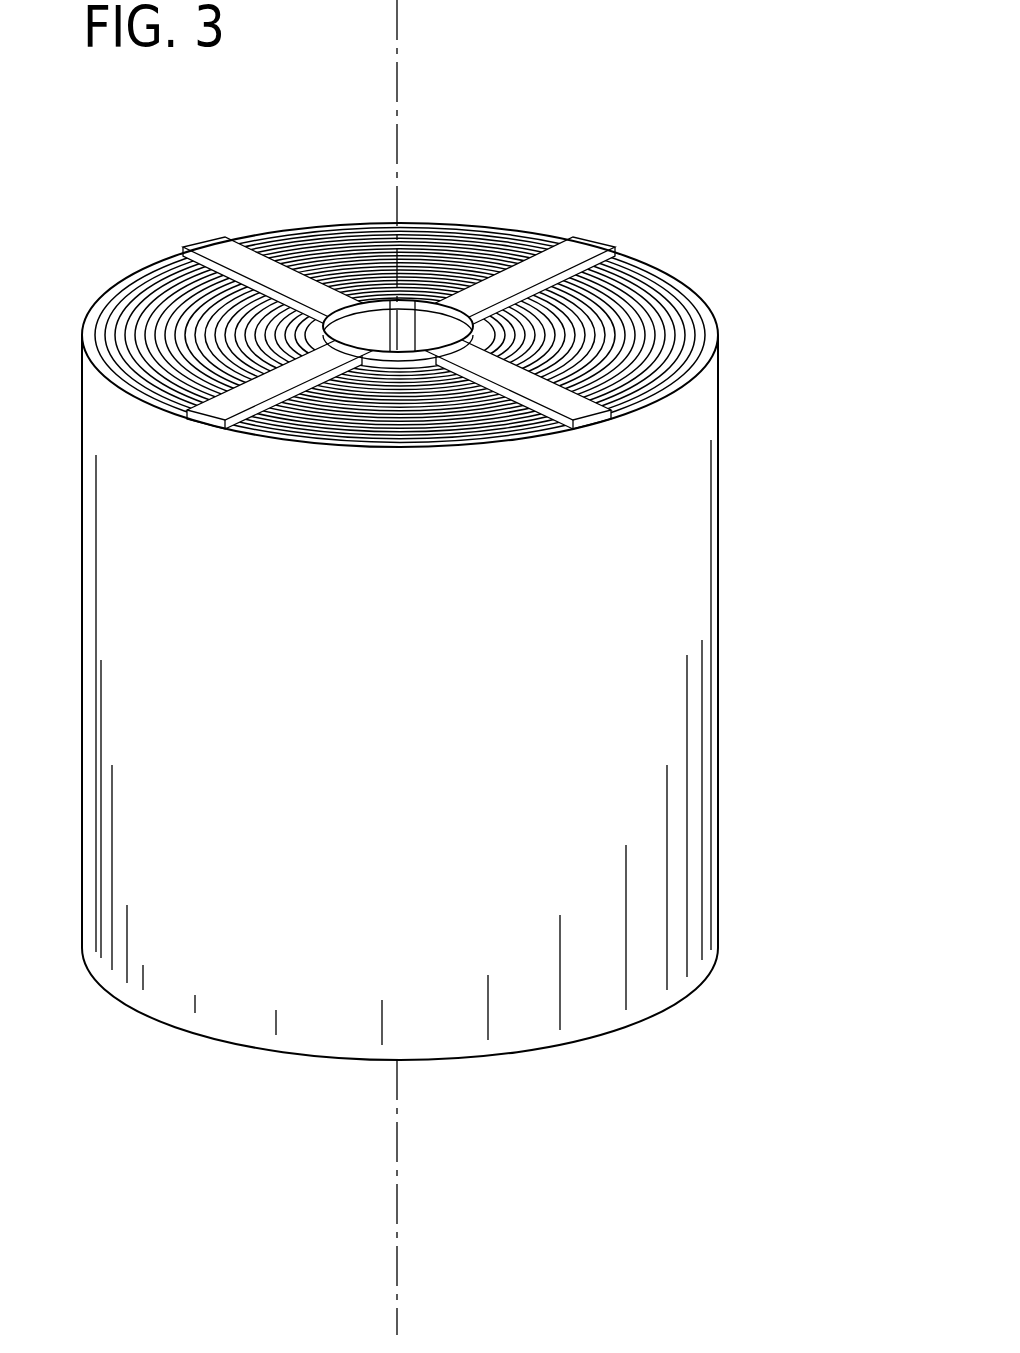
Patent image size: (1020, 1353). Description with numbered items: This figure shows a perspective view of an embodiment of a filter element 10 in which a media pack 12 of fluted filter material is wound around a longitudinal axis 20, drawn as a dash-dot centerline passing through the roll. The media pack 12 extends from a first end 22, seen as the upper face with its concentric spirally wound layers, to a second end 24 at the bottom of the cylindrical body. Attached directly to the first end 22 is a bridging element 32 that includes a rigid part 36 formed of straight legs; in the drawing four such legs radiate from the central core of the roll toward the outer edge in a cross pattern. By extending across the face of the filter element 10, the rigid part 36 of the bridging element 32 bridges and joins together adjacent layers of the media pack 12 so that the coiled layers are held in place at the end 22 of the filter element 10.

The filter element 10 is at (749, 135).
The media pack 12 is at (673, 615).
The longitudinal axis 20 is at (396, 20).
The first end 22 is at (150, 327).
The second end 24 is at (632, 1023).
The bridging element 32 is at (584, 248).
The rigid part 36 is at (535, 264).